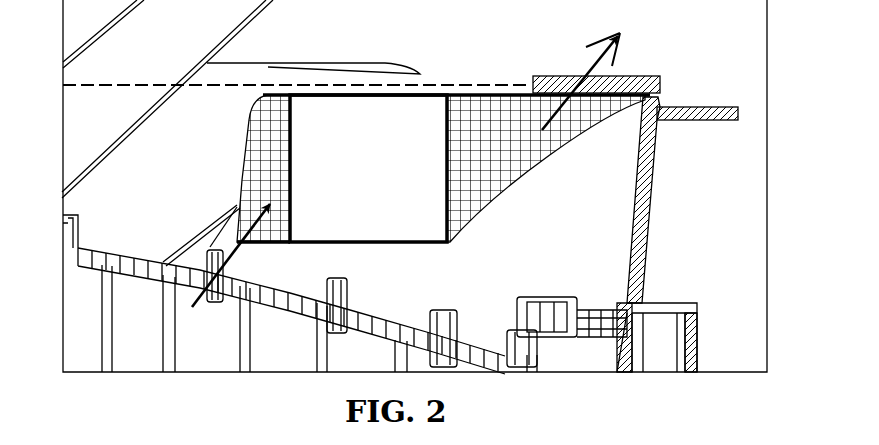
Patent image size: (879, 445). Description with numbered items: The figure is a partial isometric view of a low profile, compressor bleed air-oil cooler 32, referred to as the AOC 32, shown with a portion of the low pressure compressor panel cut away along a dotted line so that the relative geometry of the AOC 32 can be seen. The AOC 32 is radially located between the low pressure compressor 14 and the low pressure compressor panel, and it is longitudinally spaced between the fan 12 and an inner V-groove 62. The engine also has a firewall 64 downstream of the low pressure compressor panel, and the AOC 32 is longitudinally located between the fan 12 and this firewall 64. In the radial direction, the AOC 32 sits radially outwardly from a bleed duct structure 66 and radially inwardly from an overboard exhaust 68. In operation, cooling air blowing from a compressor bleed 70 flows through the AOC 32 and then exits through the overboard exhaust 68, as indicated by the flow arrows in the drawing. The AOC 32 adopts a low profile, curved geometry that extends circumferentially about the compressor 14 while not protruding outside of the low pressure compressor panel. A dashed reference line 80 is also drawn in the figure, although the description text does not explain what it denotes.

The fan 12 is at (318, 68).
The low pressure compressor 14 is at (133, 262).
The air-oil cooler 32 is at (358, 204).
The inner V-groove 62 is at (682, 106).
The firewall 64 is at (652, 222).
The 2.5 bleed duct structure 66 is at (537, 296).
The overboard exhaust 68 is at (532, 92).
The compressor bleed 70 is at (255, 245).
The engine centerline 80 is at (138, 84).